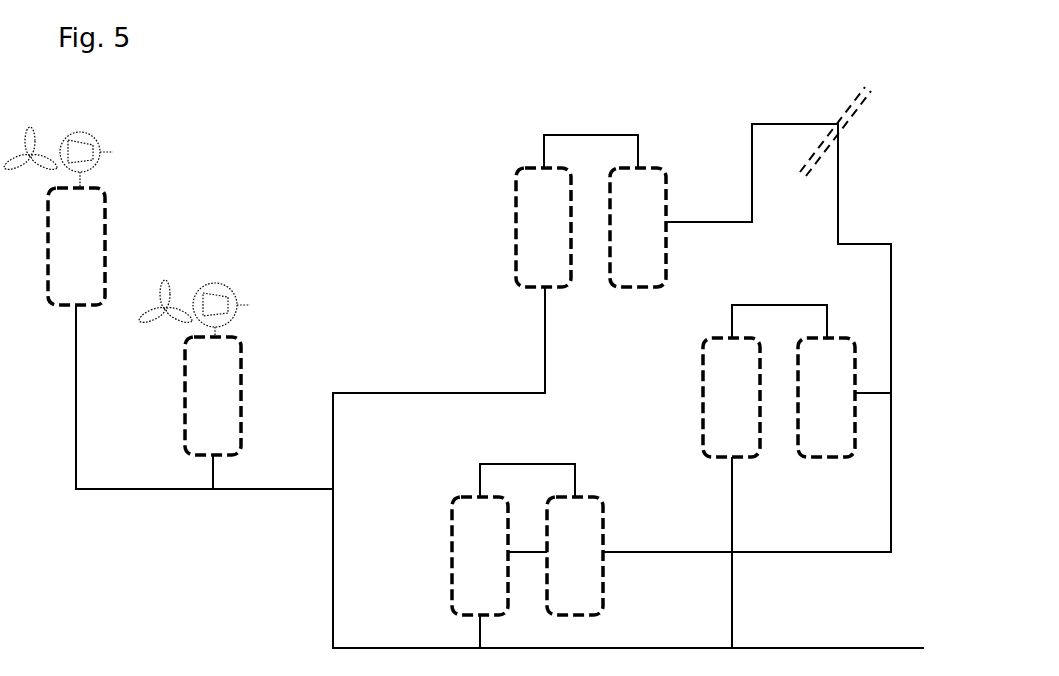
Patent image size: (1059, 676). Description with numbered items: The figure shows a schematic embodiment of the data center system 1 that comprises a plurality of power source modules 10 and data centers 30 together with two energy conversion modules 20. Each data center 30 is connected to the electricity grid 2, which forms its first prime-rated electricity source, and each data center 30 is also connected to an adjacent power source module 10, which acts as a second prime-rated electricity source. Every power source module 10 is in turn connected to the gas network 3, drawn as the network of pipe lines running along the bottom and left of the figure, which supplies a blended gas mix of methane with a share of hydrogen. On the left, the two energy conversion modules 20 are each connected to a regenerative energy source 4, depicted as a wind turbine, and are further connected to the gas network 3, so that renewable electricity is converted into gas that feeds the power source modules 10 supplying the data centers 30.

The data center system 1 is at (357, 136).
The electricity grid 2 is at (772, 123).
The gas network 3 is at (153, 488).
The regenerative energy source 4 is at (95, 138).
The power source module 10 is at (606, 391).
The energy conversion module 20 is at (144, 321).
The data center 30 is at (701, 391).